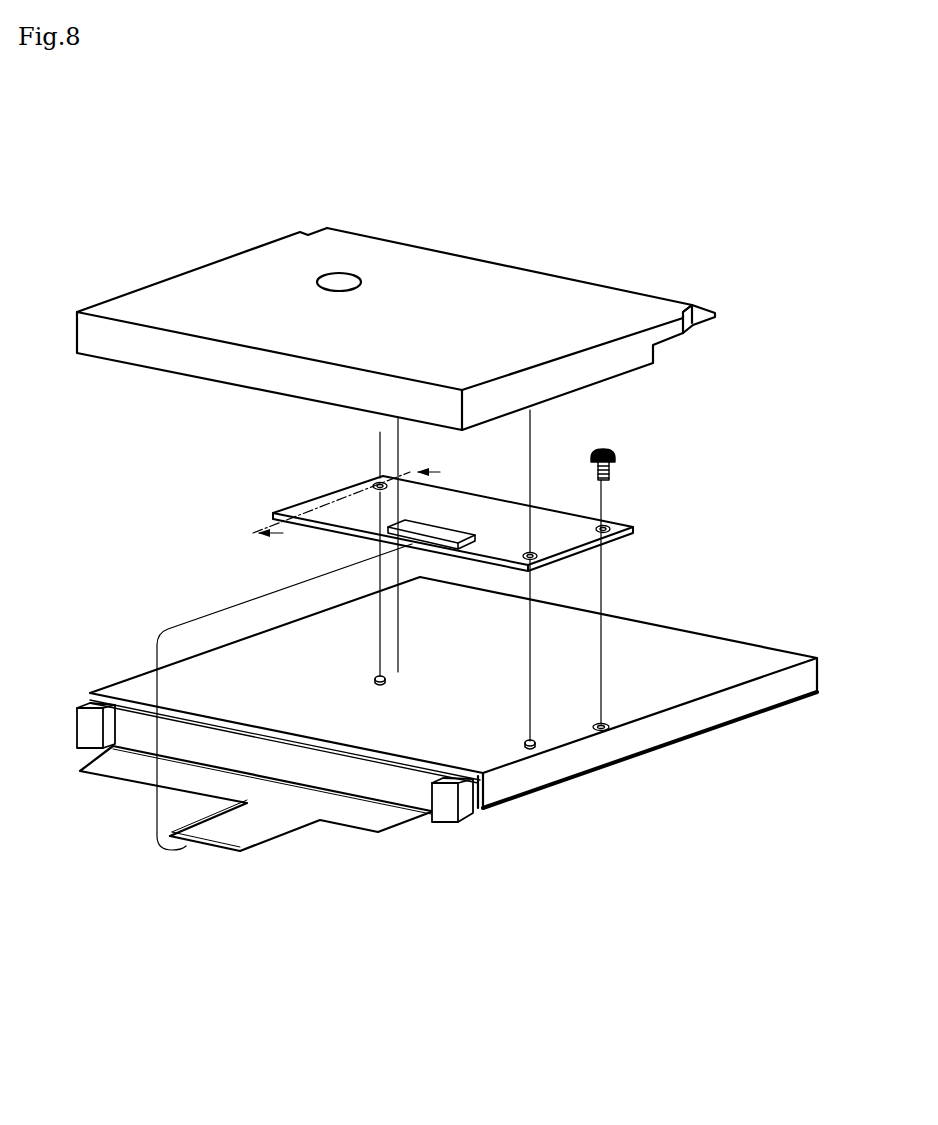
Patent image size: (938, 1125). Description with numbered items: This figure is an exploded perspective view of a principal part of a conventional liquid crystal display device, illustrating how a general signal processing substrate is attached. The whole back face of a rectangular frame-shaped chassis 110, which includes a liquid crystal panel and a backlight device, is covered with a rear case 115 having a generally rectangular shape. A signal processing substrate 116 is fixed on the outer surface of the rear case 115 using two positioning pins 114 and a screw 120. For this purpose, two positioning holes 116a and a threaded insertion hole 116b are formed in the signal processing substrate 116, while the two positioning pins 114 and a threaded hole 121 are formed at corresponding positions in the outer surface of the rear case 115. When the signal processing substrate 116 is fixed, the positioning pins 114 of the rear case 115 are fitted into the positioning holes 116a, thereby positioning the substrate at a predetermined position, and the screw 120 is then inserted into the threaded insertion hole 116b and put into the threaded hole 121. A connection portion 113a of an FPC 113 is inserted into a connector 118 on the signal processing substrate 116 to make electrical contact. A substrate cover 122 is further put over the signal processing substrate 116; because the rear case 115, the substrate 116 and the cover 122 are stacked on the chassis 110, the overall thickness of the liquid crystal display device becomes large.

The substrate cover 122 is at (550, 268).
The signal processing substrate 116 is at (268, 507).
The positioning hole 116a is at (374, 479).
The threaded insertion hole 116b is at (612, 519).
The connector 118 is at (440, 521).
The screw 120 is at (617, 462).
The rear case 115 is at (724, 652).
The positioning pin 114 is at (387, 675).
The threaded hole 121 is at (612, 733).
The chassis 110 is at (466, 798).
The FPC 113 is at (395, 823).
The connection portion 113a is at (223, 855).